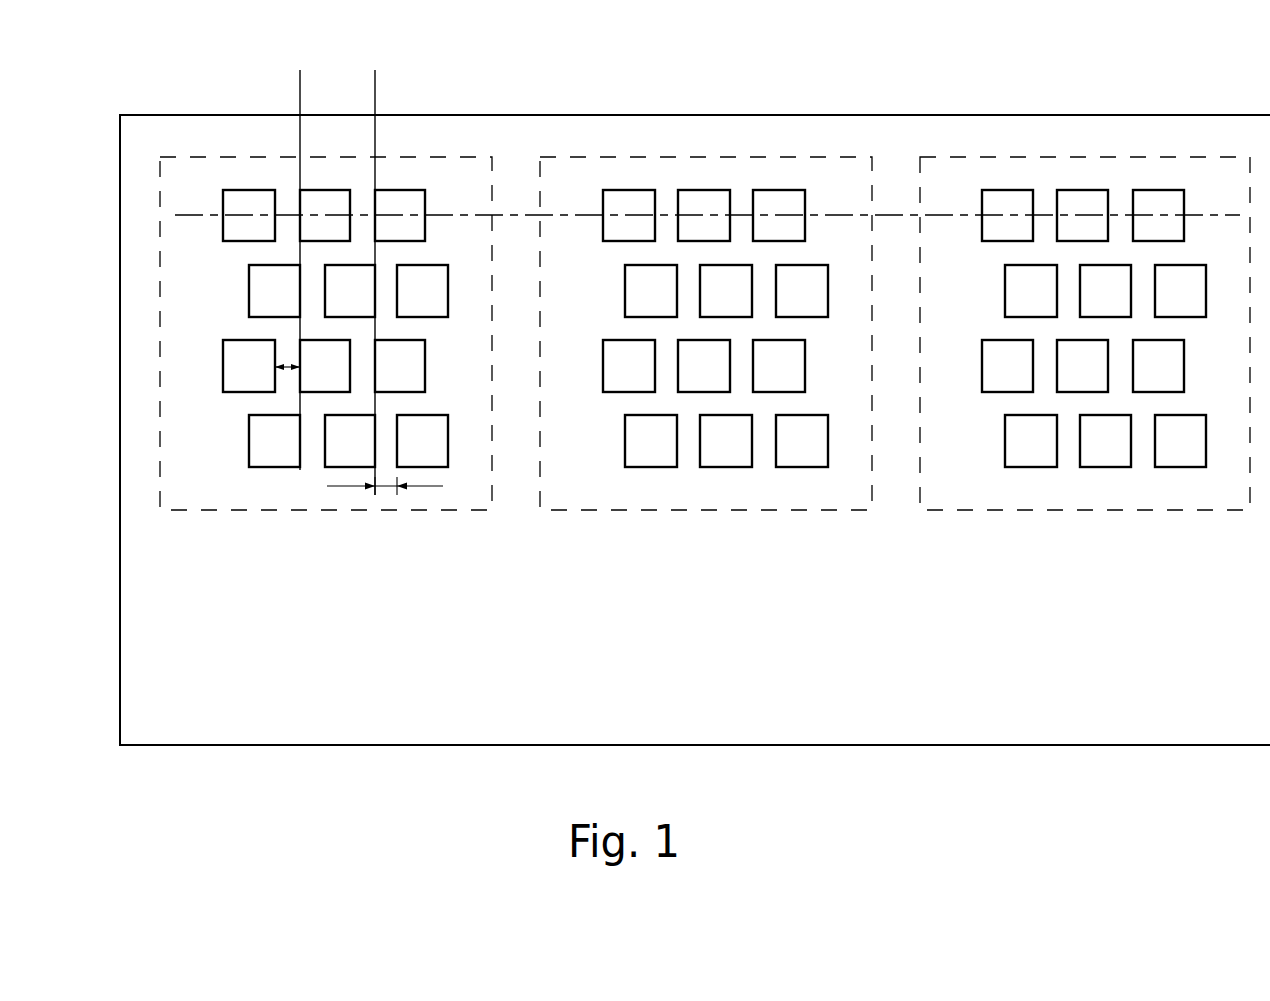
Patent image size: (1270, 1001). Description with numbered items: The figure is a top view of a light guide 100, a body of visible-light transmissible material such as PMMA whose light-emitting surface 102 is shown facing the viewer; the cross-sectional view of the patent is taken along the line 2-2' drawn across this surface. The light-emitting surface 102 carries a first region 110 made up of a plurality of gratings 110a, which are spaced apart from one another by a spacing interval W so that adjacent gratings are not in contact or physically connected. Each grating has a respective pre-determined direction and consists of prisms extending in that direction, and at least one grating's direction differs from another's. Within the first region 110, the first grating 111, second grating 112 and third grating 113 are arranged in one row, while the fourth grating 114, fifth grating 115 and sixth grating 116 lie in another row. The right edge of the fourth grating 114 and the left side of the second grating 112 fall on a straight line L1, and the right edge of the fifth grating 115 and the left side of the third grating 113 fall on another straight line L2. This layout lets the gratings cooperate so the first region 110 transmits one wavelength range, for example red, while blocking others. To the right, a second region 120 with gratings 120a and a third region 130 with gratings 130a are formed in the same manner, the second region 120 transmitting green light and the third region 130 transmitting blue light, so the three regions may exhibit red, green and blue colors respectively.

The light guide 100 is at (729, 113).
The light-emitting surface 102 is at (750, 670).
The first region 110 is at (340, 512).
The gratings 110a is at (277, 470).
The first grating 111 is at (248, 190).
The second grating 112 is at (322, 190).
The third grating 113 is at (403, 190).
The fourth grating 114 is at (249, 302).
The fifth grating 115 is at (357, 318).
The sixth grating 116 is at (440, 262).
The second region 120 is at (780, 512).
The gratings 120a is at (650, 470).
The third region 130 is at (1102, 512).
The gratings 130a is at (1031, 470).
The line 2-2' 2 is at (193, 214).
The straight line L1 is at (300, 248).
The straight line L2 is at (377, 261).
The spacing interval W is at (359, 422).